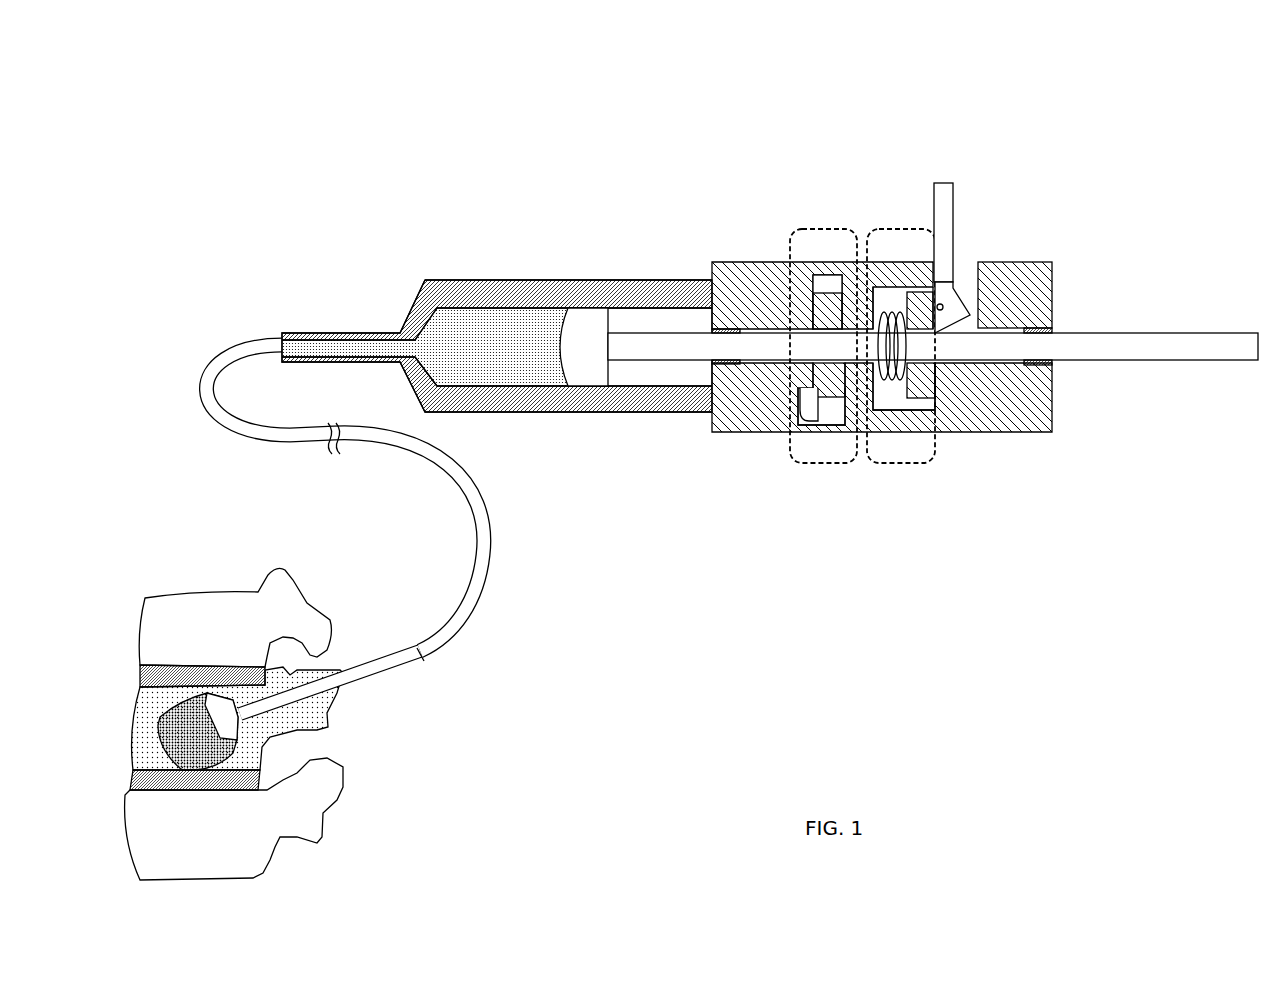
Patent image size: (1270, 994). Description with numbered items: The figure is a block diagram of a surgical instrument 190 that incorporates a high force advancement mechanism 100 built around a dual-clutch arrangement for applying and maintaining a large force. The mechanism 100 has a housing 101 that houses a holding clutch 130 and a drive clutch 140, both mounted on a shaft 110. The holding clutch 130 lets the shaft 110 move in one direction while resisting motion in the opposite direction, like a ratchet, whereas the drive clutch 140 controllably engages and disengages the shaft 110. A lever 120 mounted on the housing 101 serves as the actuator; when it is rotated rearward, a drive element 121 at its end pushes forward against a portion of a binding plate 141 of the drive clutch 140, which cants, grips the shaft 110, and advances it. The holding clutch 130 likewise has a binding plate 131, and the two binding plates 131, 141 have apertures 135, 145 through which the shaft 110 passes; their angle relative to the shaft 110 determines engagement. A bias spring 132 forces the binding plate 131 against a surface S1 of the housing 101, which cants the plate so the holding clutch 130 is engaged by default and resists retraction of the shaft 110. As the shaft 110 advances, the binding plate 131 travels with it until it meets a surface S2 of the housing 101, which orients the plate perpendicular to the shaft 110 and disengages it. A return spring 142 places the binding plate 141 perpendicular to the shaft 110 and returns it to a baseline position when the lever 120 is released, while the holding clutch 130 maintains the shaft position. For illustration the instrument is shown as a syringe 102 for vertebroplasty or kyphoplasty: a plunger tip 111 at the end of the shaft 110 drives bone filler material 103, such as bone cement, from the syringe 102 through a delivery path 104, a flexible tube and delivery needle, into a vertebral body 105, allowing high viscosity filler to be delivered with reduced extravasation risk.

The high force advancement mechanism 100 is at (990, 128).
The housing 101 is at (1055, 393).
The syringe 102 is at (485, 418).
The bone filler material 103 is at (438, 338).
The delivery path 104 is at (480, 608).
The vertebral body 105 is at (330, 715).
The shaft 110 is at (660, 330).
The plunger tip 111 is at (578, 336).
The lever 120 is at (943, 182).
The drive element 121 is at (956, 300).
The holding clutch 130 is at (796, 361).
The binding plate 131 is at (806, 470).
The bias spring 132 is at (828, 397).
The aperture 135 is at (840, 470).
The drive clutch 140 is at (905, 357).
The binding plate 141 is at (915, 463).
The return spring 142 is at (897, 470).
The aperture 145 is at (925, 470).
The surgical instrument 190 is at (272, 150).
The surface S1 is at (827, 277).
The surface S2 is at (832, 270).